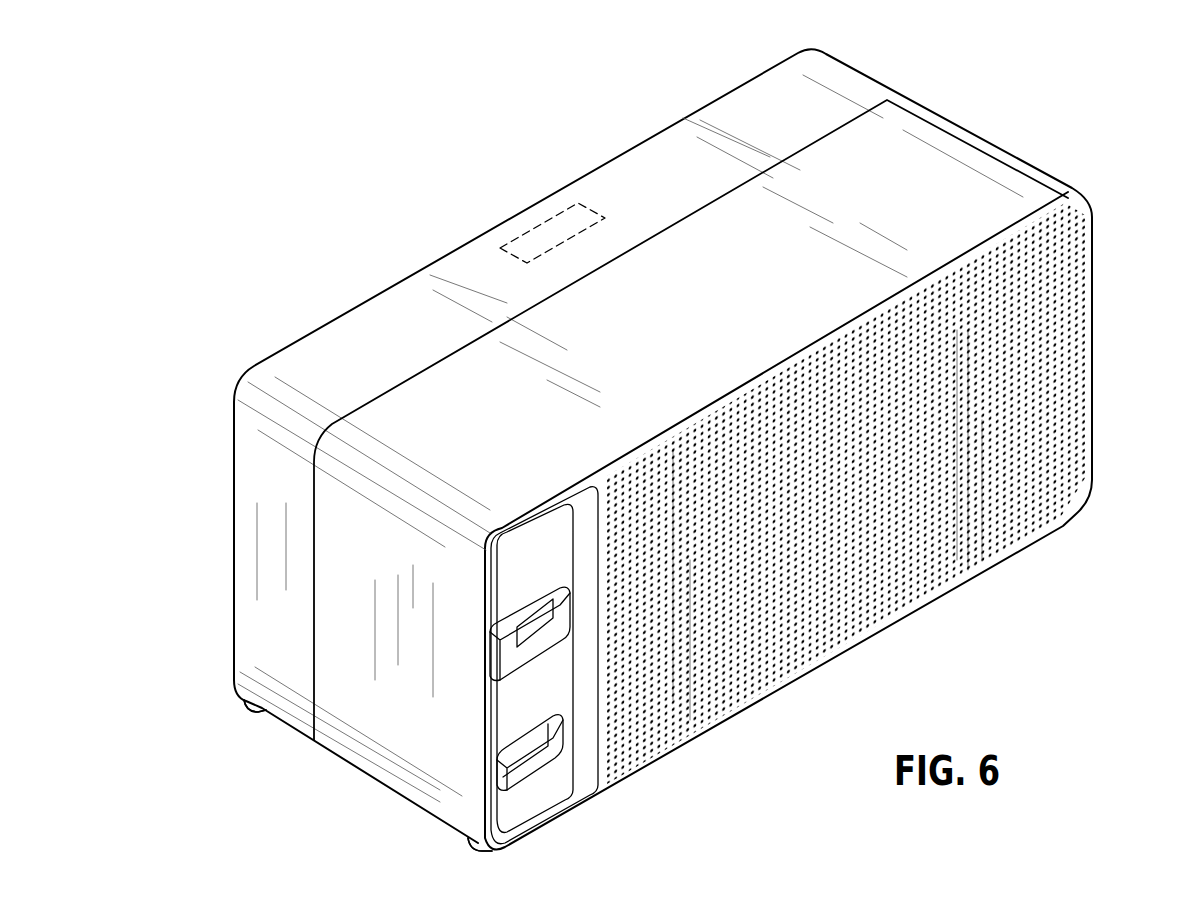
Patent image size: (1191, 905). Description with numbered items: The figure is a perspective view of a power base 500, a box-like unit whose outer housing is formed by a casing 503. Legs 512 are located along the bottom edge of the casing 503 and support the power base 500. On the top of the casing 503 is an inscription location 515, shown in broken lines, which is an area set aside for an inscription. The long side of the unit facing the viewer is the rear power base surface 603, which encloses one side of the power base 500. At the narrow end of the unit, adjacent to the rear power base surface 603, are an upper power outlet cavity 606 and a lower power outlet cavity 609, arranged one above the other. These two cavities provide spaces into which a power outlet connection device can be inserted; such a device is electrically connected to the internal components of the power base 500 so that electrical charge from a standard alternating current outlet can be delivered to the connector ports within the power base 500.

The power base 500 is at (1077, 117).
The casing 503 is at (868, 73).
The inscription location 515 is at (555, 232).
The rear power base surface 603 is at (717, 665).
The upper power outlet cavity 606 is at (522, 627).
The lower power outlet cavity 609 is at (533, 746).
The legs 512 is at (255, 702).